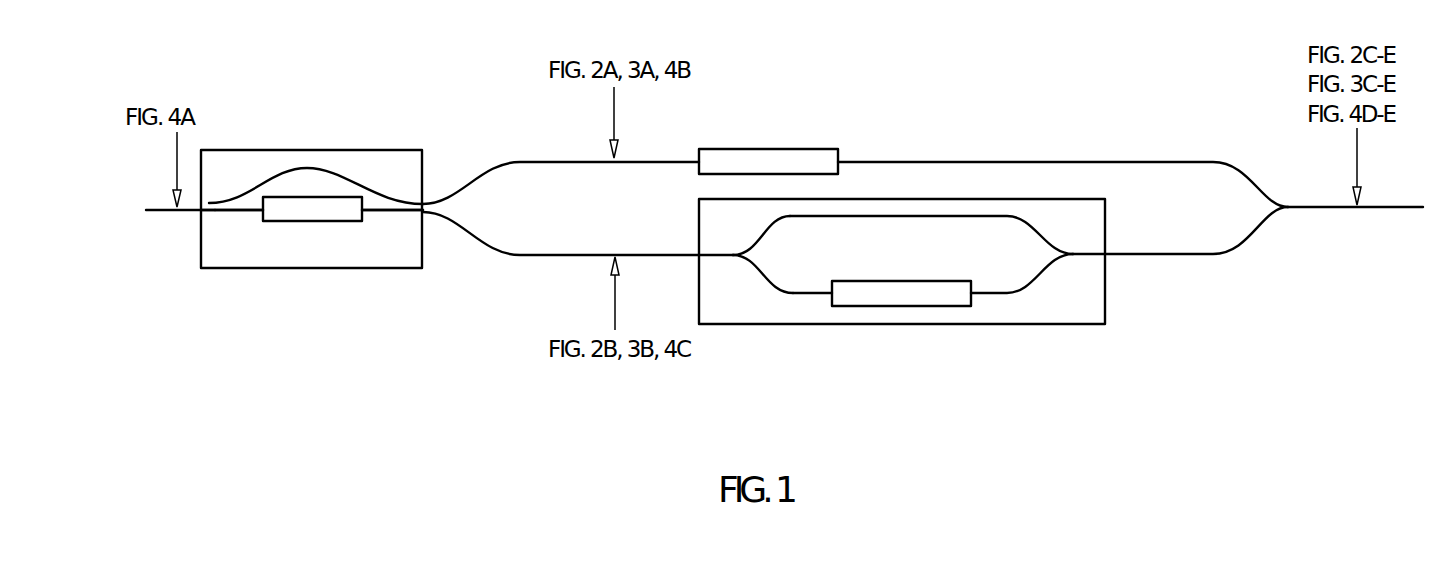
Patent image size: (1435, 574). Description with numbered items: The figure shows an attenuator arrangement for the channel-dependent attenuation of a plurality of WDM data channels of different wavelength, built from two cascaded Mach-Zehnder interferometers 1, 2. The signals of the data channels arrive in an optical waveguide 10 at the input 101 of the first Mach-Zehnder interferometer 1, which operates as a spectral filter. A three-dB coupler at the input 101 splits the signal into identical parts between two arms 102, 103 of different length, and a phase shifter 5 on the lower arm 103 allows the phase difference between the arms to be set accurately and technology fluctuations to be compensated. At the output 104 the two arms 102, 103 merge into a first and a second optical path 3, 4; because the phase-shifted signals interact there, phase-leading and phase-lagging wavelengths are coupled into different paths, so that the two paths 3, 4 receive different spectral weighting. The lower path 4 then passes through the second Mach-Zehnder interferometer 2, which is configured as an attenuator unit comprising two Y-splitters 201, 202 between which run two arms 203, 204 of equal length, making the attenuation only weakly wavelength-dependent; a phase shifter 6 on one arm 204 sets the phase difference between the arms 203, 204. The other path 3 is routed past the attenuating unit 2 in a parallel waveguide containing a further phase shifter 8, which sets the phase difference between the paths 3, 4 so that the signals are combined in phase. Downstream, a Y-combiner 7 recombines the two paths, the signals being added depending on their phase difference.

The optical waveguide 10 is at (152, 207).
The first Mach-Zehnder interferometer 1 is at (360, 158).
The input 101 is at (200, 212).
The upper arm 102 is at (297, 168).
The lower arm 103 is at (238, 212).
The output 104 is at (423, 204).
The phase shifter 5 is at (330, 221).
The first optical path 3 is at (632, 162).
The second optical path 4 is at (632, 257).
The phase shifter 8 is at (788, 153).
The second Mach-Zehnder interferometer 2 is at (1062, 313).
The Y-splitter 201 is at (733, 258).
The Y-splitter 202 is at (1082, 255).
The arm 203 is at (1040, 232).
The arm 204 is at (790, 295).
The phase shifter 6 is at (908, 297).
The Y-combiner 7 is at (1291, 228).